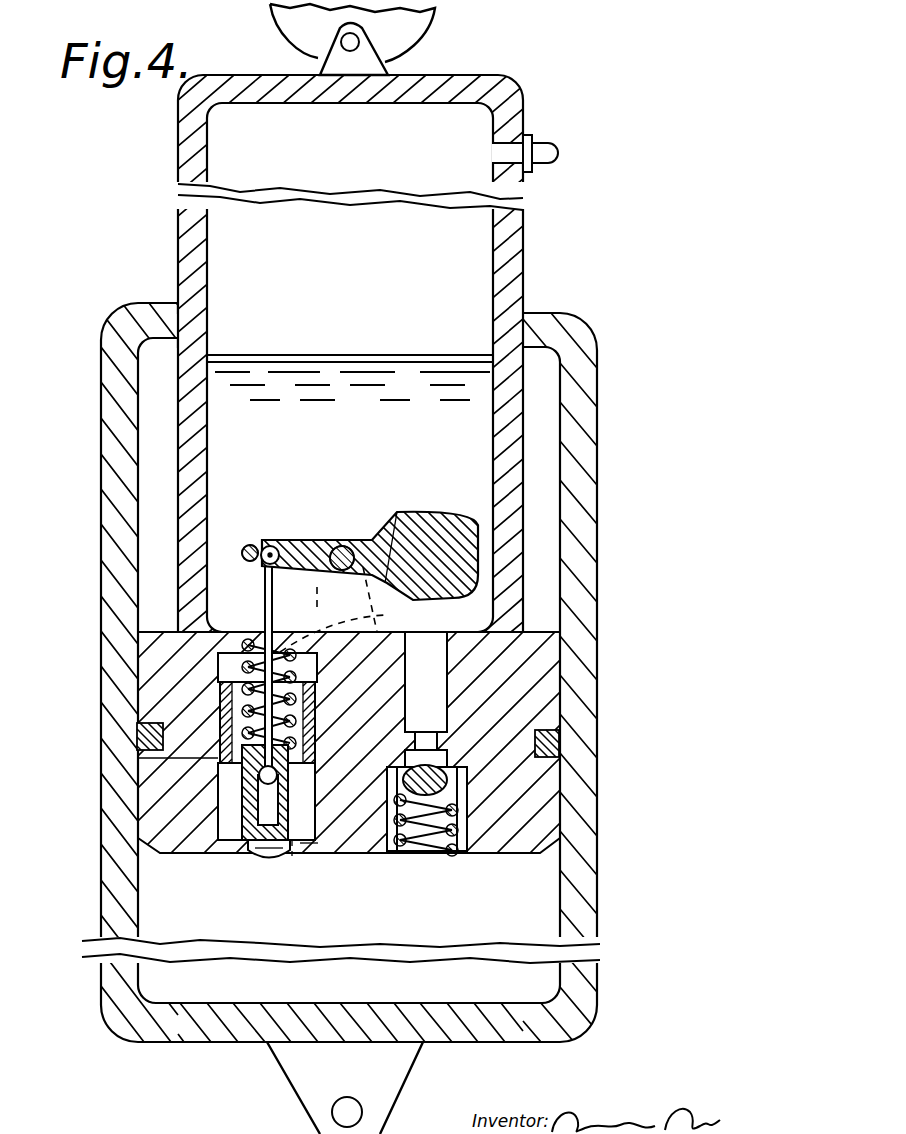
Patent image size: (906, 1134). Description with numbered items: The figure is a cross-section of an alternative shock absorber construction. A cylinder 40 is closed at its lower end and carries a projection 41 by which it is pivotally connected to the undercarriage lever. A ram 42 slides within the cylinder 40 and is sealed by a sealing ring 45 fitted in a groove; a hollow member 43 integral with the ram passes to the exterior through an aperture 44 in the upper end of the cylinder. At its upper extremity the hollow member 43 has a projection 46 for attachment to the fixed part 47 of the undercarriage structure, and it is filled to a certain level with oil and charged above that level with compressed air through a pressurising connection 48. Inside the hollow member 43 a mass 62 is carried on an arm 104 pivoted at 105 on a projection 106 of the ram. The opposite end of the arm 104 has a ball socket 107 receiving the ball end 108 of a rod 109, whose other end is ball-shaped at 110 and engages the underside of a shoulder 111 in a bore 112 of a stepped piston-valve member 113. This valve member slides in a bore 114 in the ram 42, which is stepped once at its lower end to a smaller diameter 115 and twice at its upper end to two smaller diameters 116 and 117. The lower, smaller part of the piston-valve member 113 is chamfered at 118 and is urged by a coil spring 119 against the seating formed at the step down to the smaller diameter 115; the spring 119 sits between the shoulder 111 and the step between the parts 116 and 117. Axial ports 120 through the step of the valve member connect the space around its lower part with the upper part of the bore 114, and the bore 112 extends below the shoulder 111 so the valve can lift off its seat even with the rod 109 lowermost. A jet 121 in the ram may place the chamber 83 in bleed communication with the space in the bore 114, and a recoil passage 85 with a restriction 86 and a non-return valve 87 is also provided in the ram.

The cylinder 40 is at (113, 963).
The projection 41 is at (395, 1065).
The ram 42 is at (545, 818).
The hollow member 43 is at (190, 212).
The aperture 44 is at (173, 308).
The sealing ring 45 is at (560, 746).
The projection 46 is at (375, 70).
The fixed part 47 is at (310, 32).
The pressurising connection 48 is at (508, 155).
The mass 62 is at (447, 525).
The chamber 83 is at (470, 985).
The recoil passage 85 is at (447, 680).
The restriction 86 is at (437, 740).
The non-return valve 87 is at (463, 774).
The arm 104 is at (369, 545).
The pivot 105 is at (343, 548).
The projection 106 is at (317, 615).
The ball socket 107 is at (249, 546).
The ball end 108 is at (275, 547).
The rod 109 is at (264, 616).
The ball-shaped end 110 is at (214, 797).
The shoulder 111 is at (258, 773).
The bore 112 is at (238, 846).
The stepped piston-valve member 113 is at (225, 712).
The bore 114 is at (222, 668).
The smaller diameter part 115 is at (278, 855).
The smaller diameter part 116 is at (232, 640).
The smaller diameter part 117 is at (355, 629).
The chamfered end 118 is at (262, 845).
The coil spring 119 is at (318, 842).
The axial ports 120 is at (220, 758).
The jet 121 is at (297, 860).